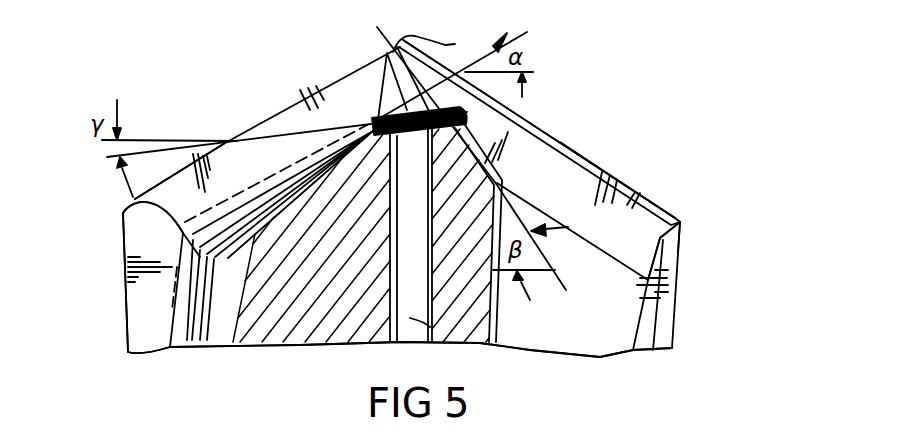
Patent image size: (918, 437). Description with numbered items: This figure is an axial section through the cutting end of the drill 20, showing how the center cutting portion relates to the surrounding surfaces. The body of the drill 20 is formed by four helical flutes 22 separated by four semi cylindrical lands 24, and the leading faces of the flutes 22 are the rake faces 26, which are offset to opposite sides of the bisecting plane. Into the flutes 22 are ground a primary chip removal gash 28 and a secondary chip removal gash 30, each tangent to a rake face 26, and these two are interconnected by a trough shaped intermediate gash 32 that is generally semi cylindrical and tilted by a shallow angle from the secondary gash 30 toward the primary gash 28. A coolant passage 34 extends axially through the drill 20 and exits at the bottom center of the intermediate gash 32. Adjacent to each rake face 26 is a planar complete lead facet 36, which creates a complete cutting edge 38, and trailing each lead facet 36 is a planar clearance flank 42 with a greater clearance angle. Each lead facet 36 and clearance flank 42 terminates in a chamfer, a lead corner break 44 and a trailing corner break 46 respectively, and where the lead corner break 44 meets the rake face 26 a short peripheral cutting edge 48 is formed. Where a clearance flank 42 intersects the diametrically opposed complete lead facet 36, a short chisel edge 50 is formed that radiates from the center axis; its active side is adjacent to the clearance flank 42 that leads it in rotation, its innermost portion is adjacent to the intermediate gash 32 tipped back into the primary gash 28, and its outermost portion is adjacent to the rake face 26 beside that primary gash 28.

The drill 20 is at (700, 114).
The flutes 22 is at (210, 342).
The land 24 is at (125, 312).
The rake faces 26 is at (283, 112).
The primary chip removal gashes 28 is at (250, 249).
The secondary chip removal gashes 30 is at (468, 132).
The intermediate gash 32 is at (388, 52).
The coolant passages 34 is at (405, 343).
The complete lead facets 36 is at (226, 143).
The complete cutting edges 38 is at (248, 127).
The clearance flank 42 is at (552, 150).
The lead corner break 44 is at (123, 213).
The trailing corner break 46 is at (655, 235).
The peripheral cutting edges 48 is at (135, 197).
The chisel edges 50 is at (431, 79).